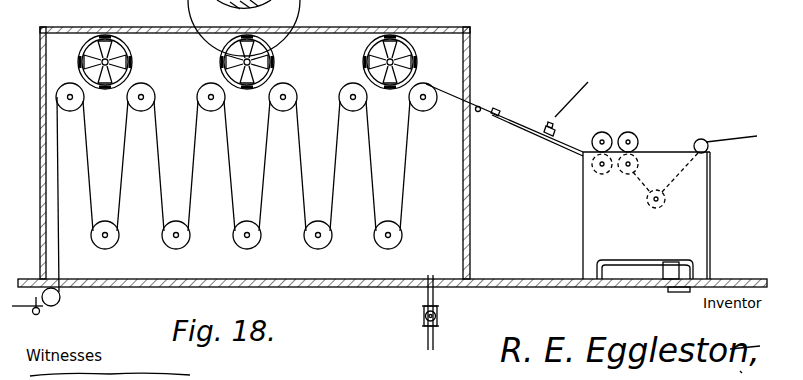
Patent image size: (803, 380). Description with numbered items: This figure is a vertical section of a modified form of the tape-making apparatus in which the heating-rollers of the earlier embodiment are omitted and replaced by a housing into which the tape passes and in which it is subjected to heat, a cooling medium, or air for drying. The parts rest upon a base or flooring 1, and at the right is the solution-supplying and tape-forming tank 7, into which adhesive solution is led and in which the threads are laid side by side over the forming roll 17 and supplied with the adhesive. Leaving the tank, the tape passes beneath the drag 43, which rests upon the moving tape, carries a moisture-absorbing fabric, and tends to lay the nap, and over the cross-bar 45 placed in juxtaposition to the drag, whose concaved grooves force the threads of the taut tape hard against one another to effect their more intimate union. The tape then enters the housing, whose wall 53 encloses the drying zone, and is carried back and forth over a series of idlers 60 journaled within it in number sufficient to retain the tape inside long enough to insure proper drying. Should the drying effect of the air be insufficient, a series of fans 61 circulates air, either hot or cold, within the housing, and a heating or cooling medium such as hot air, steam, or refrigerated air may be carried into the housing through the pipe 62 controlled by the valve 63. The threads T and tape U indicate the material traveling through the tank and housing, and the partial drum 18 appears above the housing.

The base or flooring 1 is at (528, 282).
The solution-supplying and tape-forming tank 7 is at (718, 213).
The forming roll 17 is at (650, 207).
The drum 18 is at (256, 28).
The drag 43 is at (546, 124).
The cross-bar 45 is at (478, 112).
The drying chamber 53 is at (463, 223).
The idlers 60 is at (347, 86).
The fans 61 is at (222, 63).
The pipe 62 is at (437, 297).
The valve 63 is at (421, 317).
The tape T is at (745, 115).
The fabric strip U is at (565, 137).